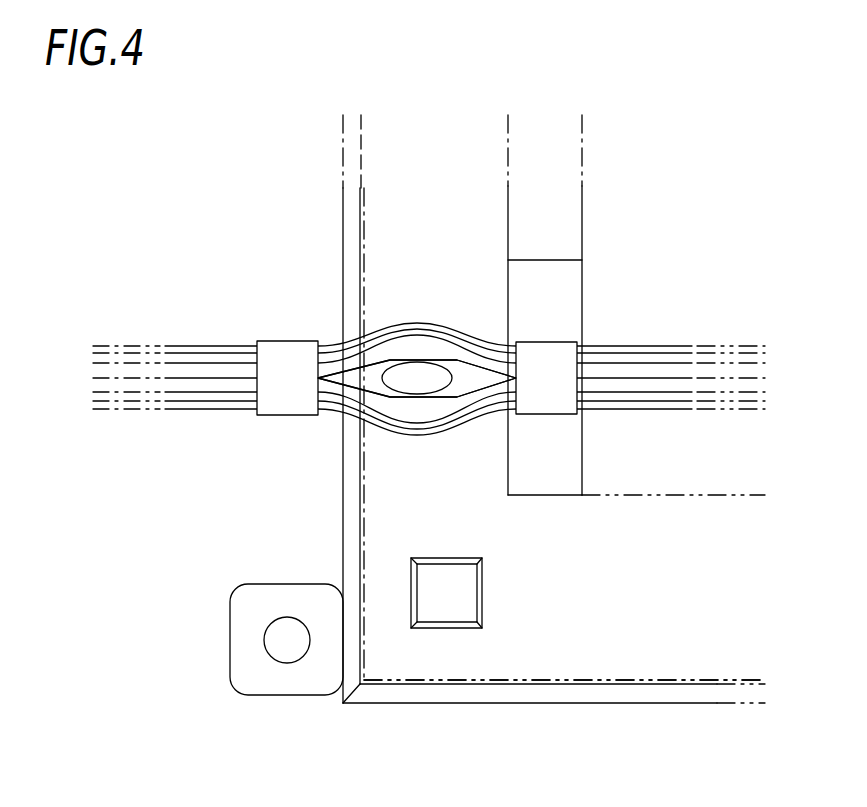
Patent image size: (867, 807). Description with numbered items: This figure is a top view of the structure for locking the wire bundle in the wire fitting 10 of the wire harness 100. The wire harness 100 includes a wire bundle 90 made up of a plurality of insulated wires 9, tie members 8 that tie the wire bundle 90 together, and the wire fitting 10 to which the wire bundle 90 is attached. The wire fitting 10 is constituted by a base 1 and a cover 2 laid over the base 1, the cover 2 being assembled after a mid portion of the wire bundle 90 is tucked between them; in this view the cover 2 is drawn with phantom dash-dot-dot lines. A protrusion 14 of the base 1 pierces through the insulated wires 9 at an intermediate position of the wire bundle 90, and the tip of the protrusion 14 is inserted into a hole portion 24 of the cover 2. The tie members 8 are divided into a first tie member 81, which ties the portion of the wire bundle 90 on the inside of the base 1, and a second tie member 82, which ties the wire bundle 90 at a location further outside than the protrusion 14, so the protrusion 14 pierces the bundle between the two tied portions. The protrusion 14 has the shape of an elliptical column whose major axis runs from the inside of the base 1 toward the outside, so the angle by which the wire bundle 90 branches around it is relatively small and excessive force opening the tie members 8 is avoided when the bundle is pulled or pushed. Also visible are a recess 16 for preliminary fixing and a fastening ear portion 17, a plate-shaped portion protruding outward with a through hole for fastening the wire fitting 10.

The wire harness 100 is at (819, 130).
The wire bundle 90 is at (429, 364).
The insulated wires 9 is at (653, 378).
The tie members 8 is at (456, 318).
The first tie member 81 is at (565, 342).
The second tie member 82 is at (270, 341).
The hole portion 24 is at (462, 342).
The protrusion 14 is at (452, 381).
The recess 16 is at (447, 628).
The fastening ear portion 17 is at (287, 696).
The wire fitting 10 is at (554, 460).
The base 1 is at (573, 706).
The cover 2 is at (428, 684).